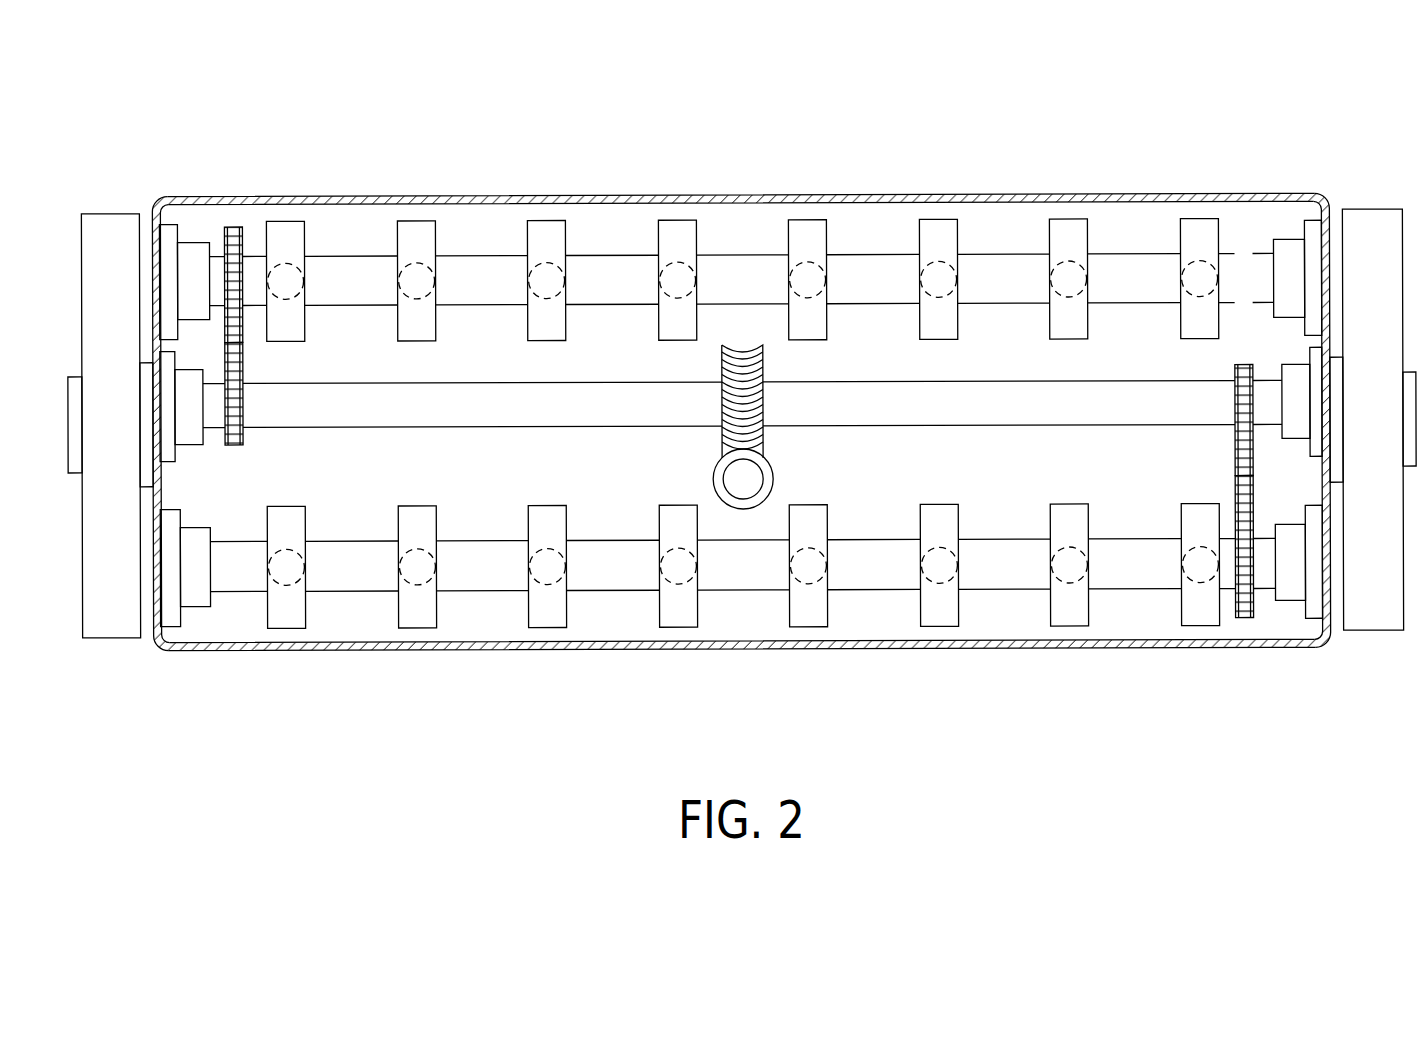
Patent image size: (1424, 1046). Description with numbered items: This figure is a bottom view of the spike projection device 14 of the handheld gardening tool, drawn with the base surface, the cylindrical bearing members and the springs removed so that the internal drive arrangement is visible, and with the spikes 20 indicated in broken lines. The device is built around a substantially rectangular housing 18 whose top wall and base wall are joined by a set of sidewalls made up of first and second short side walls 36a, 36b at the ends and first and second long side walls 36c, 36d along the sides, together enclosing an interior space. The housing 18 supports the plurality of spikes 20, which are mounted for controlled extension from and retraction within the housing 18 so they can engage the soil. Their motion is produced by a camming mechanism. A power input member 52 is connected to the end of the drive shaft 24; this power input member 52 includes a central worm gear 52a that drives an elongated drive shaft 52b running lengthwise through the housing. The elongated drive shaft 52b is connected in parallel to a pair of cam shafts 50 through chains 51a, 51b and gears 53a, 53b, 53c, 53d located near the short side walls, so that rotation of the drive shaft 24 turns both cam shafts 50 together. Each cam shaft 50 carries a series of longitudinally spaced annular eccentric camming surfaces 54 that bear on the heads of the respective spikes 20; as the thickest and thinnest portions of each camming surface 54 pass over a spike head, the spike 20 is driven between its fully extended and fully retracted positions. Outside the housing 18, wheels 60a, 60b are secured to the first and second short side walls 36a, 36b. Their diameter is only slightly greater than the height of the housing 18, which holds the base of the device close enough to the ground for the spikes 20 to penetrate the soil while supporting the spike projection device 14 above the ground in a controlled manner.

The spike projection device 14 is at (1053, 146).
The housing 18 is at (498, 196).
The spikes 20 is at (550, 575).
The drive shaft 24 is at (748, 480).
The first short side wall 36a is at (1331, 243).
The second short side wall 36b is at (152, 229).
The first long side wall 36c is at (752, 649).
The second long side wall 36d is at (734, 196).
The cam shafts 50 is at (350, 248).
The first chain 51a is at (225, 345).
The second chain 51b is at (1237, 473).
The power input member 52 is at (742, 452).
The central worm gear 52a is at (722, 437).
The elongated drive shaft 52b is at (1000, 405).
The gear 53a is at (1235, 400).
The gear 53b is at (245, 439).
The gear 53c is at (1253, 619).
The gear 53d is at (226, 231).
The annular eccentric camming surfaces 54 is at (931, 219).
The wheel 60a is at (113, 636).
The wheel 60b is at (1375, 632).